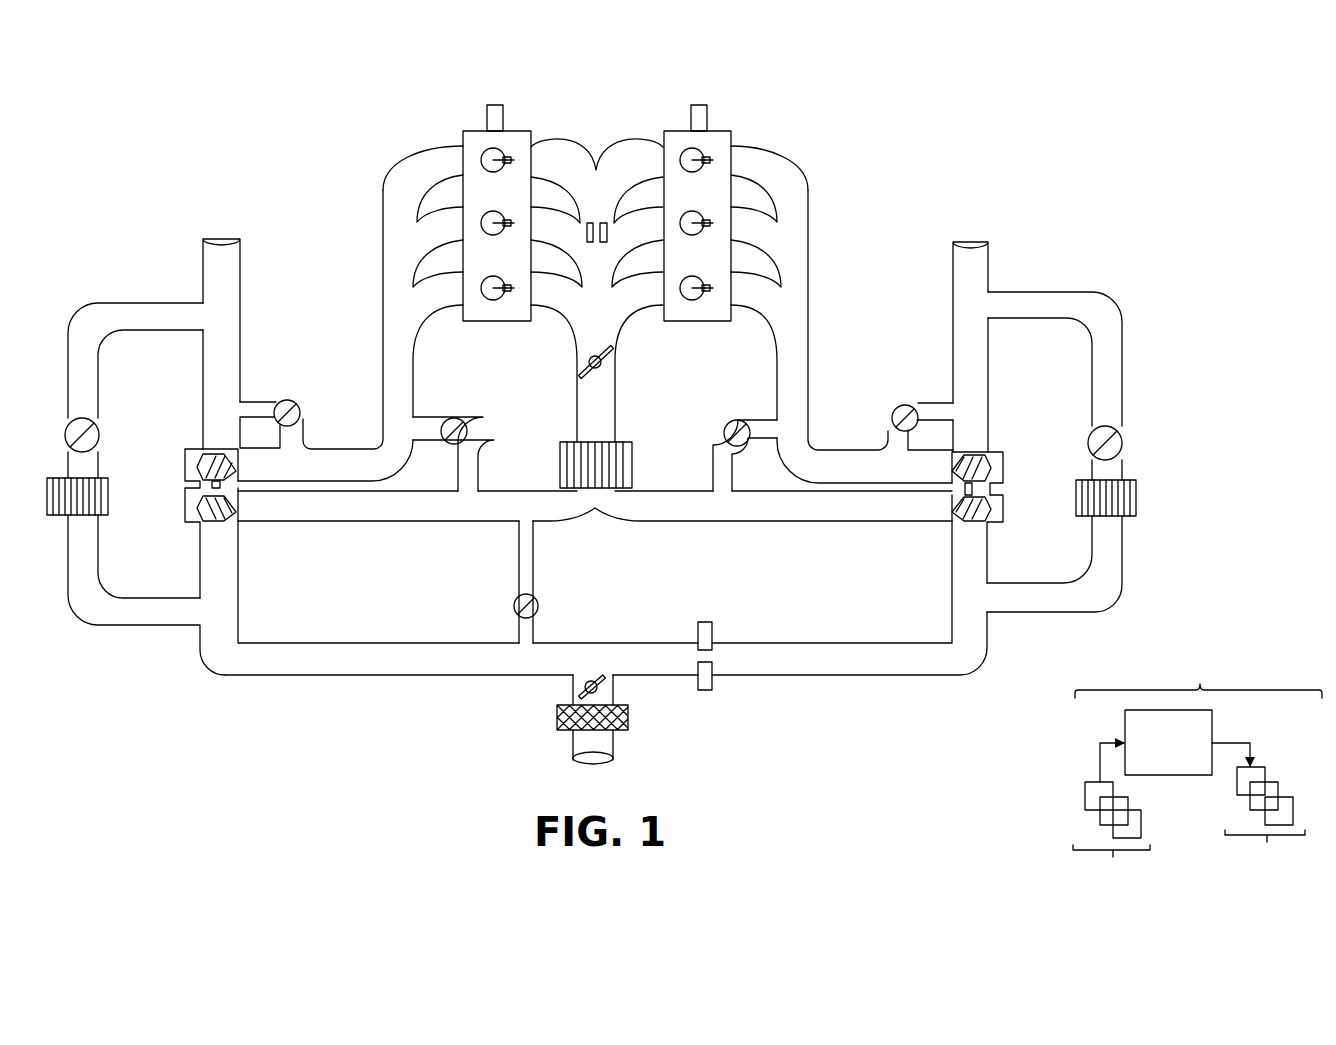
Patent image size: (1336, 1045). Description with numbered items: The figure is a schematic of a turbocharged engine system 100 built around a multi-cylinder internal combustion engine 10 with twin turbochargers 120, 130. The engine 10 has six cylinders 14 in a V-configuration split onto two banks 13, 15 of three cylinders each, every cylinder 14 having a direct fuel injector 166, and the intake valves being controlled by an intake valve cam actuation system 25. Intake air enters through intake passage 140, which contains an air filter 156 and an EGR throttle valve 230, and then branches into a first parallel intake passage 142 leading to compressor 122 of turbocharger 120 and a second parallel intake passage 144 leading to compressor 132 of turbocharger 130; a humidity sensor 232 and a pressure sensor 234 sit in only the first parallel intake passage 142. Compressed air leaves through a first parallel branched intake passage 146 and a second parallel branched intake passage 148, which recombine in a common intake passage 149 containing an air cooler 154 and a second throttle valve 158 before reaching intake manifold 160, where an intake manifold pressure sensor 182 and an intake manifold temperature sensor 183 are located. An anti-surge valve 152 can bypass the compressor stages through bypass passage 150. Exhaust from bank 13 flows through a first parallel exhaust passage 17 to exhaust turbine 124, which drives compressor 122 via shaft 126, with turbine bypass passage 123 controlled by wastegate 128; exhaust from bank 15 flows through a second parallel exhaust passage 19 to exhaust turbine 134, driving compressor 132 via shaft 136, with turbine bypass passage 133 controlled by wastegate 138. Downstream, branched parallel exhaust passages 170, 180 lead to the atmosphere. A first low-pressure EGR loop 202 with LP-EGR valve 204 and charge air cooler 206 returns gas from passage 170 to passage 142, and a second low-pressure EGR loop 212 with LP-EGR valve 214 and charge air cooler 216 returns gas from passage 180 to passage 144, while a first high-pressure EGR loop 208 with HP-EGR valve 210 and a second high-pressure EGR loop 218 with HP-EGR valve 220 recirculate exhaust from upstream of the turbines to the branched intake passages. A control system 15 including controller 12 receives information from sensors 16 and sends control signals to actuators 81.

The multi-cylinder internal combustion engine 10 is at (952, 131).
The turbocharged engine system 100 is at (1232, 131).
The controller 12 is at (1175, 746).
The first bank 13 is at (718, 131).
The cylinder 14 is at (706, 218).
The second bank / control system 15 is at (476, 131).
The sensors 16 is at (1111, 840).
The first parallel exhaust passage 17 is at (810, 381).
The second parallel exhaust passage 19 is at (383, 372).
The intake valve cam actuation system 25 is at (499, 105).
The actuators 81 is at (1266, 824).
The turbocharger 120 is at (972, 440).
The compressor 122 is at (966, 522).
The turbine bypass passage 123 is at (942, 403).
The exhaust turbine 124 is at (984, 457).
The shaft 126 is at (973, 490).
The wastegate 128 is at (895, 408).
The turbocharger 130 is at (219, 435).
The compressor 132 is at (227, 521).
The turbine bypass passage 133 is at (257, 398).
The exhaust turbine 134 is at (196, 453).
The shaft 136 is at (203, 498).
The wastegate 138 is at (300, 404).
The intake passage 140 is at (573, 748).
The first parallel intake passage 142 is at (771, 643).
The second parallel intake passage 144 is at (366, 643).
The first parallel branched intake passage 146 is at (761, 523).
The second parallel branched intake passage 148 is at (339, 523).
The common intake passage 149 is at (616, 379).
The bypass passage 150 is at (534, 541).
The anti-surge valve 152 is at (538, 607).
The air cooler 154 is at (633, 460).
The air filter 156 is at (630, 714).
The second air intake throttle valve 158 is at (593, 356).
The intake manifold 160 is at (595, 142).
The fuel injector 166 is at (713, 224).
The branched parallel exhaust passage 170 is at (953, 281).
The branched parallel exhaust passage 180 is at (240, 284).
The intake manifold pressure sensor 182 is at (588, 243).
The intake manifold temperature sensor 183 is at (606, 243).
The first low-pressure EGR loop 202 is at (1122, 366).
The LP-EGR valve 204 is at (1123, 432).
The charge air cooler 206 is at (1128, 478).
The first high-pressure EGR loop 208 is at (714, 434).
The HP-EGR valve 210 is at (731, 421).
The second low-pressure EGR loop 212 is at (108, 302).
The LP-EGR valve 214 is at (90, 423).
The charge air cooler 216 is at (75, 518).
The second high-pressure EGR loop 218 is at (480, 452).
The HP-EGR valve 220 is at (454, 418).
The EGR throttle valve 230 is at (592, 680).
The humidity sensor 232 is at (712, 622).
The pressure sensor 234 is at (711, 691).